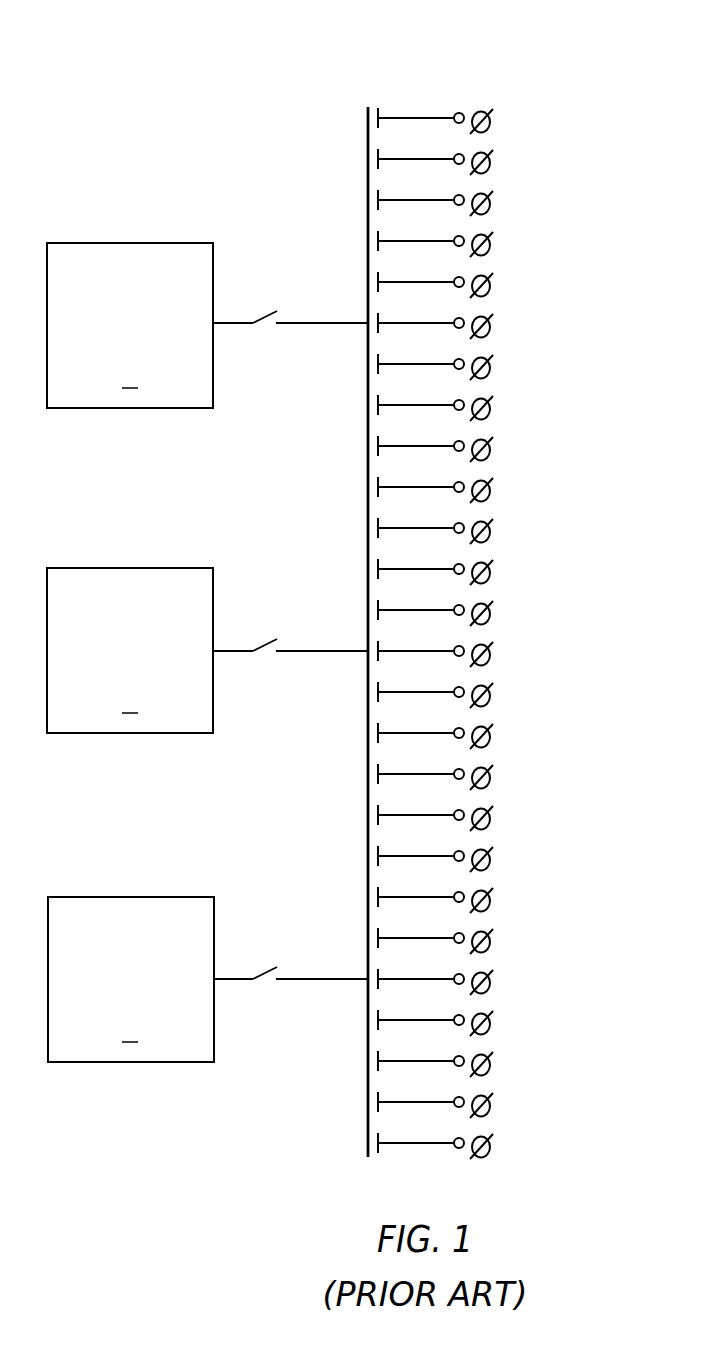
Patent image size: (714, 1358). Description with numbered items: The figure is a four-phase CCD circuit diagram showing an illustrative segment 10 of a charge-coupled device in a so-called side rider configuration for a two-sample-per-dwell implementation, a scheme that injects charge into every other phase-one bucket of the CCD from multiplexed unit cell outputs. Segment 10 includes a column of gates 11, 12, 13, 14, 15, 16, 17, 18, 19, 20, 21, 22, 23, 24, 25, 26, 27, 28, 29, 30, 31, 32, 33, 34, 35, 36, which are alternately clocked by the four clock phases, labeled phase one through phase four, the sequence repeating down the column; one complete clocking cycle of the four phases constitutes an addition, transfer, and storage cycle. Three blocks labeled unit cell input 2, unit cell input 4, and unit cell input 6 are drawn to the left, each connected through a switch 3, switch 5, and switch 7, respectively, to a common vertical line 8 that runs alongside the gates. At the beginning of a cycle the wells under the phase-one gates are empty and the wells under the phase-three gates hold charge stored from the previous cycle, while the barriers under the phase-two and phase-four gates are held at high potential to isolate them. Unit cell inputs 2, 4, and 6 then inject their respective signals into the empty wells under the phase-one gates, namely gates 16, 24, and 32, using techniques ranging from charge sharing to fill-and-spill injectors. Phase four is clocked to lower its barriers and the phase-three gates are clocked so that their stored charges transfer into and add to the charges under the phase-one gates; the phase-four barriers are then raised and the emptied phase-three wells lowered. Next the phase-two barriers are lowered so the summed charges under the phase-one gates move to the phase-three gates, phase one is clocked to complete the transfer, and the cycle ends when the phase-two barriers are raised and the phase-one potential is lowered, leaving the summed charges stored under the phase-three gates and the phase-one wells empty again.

The unit cell input 2 is at (130, 325).
The switch 3 is at (260, 311).
The unit cell input 4 is at (130, 650).
The switch 5 is at (260, 636).
The unit cell input 6 is at (131, 979).
The switch 7 is at (260, 965).
The common bus line 8 is at (366, 158).
The segment 10 is at (393, 88).
The gate 11 is at (512, 118).
The gate 12 is at (512, 159).
The gate 13 is at (512, 200).
The gate 14 is at (512, 241).
The gate 15 is at (512, 282).
The gate 16 is at (512, 323).
The gate 17 is at (512, 364).
The gate 18 is at (512, 405).
The gate 19 is at (512, 446).
The gate 20 is at (512, 487).
The gate 21 is at (512, 528).
The gate 22 is at (512, 569).
The gate 23 is at (512, 610).
The gate 24 is at (512, 651).
The gate 25 is at (512, 692).
The gate 26 is at (512, 733).
The gate 27 is at (512, 774).
The gate 28 is at (512, 815).
The gate 29 is at (512, 856).
The gate 30 is at (512, 897).
The gate 31 is at (512, 938).
The gate 32 is at (512, 979).
The gate 33 is at (512, 1020).
The gate 34 is at (512, 1061).
The gate 35 is at (512, 1102).
The gate 36 is at (512, 1143).